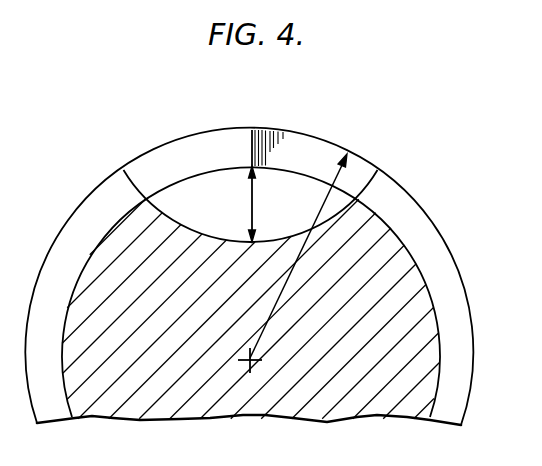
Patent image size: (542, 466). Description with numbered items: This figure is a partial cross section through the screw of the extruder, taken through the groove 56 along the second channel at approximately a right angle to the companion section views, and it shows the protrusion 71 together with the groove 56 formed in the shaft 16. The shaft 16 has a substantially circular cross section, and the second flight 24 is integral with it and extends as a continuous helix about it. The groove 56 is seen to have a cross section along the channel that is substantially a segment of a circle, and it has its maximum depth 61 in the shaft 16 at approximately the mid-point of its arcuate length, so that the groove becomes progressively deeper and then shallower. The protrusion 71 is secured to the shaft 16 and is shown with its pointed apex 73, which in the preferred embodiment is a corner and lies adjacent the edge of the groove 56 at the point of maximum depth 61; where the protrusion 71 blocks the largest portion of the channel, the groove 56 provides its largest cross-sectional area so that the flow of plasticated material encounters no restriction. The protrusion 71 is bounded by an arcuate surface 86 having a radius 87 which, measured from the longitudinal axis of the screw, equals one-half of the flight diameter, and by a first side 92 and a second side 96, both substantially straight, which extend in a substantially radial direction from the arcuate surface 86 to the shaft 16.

The shaft 16 is at (65, 318).
The second flight 24 is at (445, 243).
The groove 56 is at (178, 193).
The maximum depth 61 is at (251, 205).
The protrusion 71 is at (188, 158).
The apex 73 is at (267, 132).
The arcuate surface 86 is at (366, 162).
The radius 87 is at (290, 281).
The first side 92 is at (218, 142).
The second side 96 is at (306, 156).